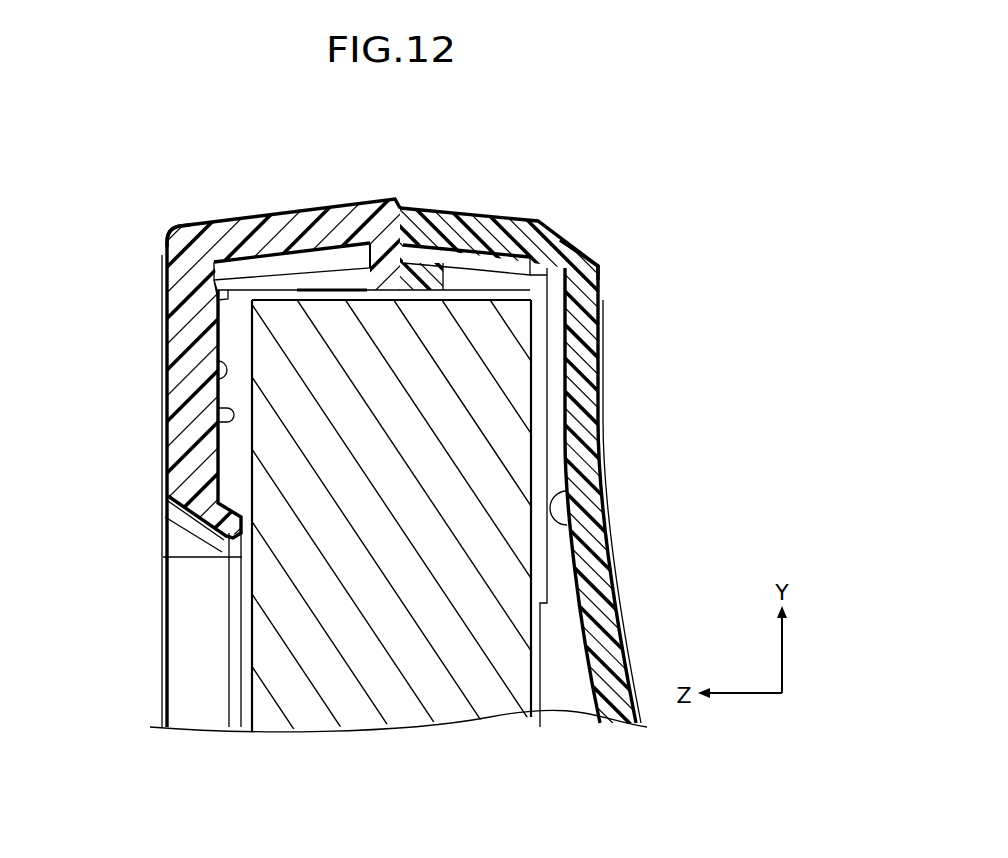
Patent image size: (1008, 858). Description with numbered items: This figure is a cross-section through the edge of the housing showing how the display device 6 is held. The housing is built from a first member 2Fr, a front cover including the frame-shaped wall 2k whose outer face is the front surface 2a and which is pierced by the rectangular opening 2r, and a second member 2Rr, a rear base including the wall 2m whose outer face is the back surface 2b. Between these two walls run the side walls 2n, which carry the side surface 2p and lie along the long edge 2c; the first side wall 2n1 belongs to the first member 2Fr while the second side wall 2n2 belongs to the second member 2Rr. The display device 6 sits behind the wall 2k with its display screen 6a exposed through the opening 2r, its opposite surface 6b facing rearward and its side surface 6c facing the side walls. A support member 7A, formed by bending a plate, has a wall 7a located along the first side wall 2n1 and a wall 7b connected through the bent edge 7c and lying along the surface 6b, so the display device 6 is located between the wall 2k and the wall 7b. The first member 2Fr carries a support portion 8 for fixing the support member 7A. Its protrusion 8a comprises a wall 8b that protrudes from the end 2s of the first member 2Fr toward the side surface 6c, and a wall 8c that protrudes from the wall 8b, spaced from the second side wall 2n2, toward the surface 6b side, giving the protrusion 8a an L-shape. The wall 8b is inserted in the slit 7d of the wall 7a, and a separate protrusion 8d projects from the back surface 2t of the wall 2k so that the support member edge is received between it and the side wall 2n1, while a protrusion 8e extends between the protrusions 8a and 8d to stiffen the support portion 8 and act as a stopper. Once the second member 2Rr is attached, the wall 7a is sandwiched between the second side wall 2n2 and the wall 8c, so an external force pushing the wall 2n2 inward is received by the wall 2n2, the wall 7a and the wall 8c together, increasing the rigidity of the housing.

The front surface 2a is at (163, 345).
The back surface 2b is at (600, 490).
The wall 2k is at (204, 455).
The back surface 2t is at (220, 377).
The opening 2r is at (190, 542).
The wall 2m is at (587, 410).
The end 2s is at (399, 204).
The wall 2n is at (455, 190).
The wall 2n1 is at (295, 262).
The wall 2n2 is at (529, 262).
The edge 2c is at (455, 190).
The side surface 2p is at (455, 190).
The first member 2Fr is at (163, 230).
The second member 2Rr is at (593, 243).
The display device 6 is at (245, 698).
The display screen 6a is at (250, 622).
The surface 6b is at (533, 373).
The side surface 6c is at (505, 293).
The support member 7A is at (224, 252).
The wall 7a is at (313, 257).
The wall 7b is at (540, 320).
The edge 7c is at (548, 271).
The slit 7d is at (350, 250).
The support portion 8 is at (294, 202).
The protrusion 8a is at (466, 183).
The wall 8b is at (407, 246).
The wall 8c is at (457, 250).
The protrusion 8d is at (212, 291).
The protrusion 8e is at (243, 262).